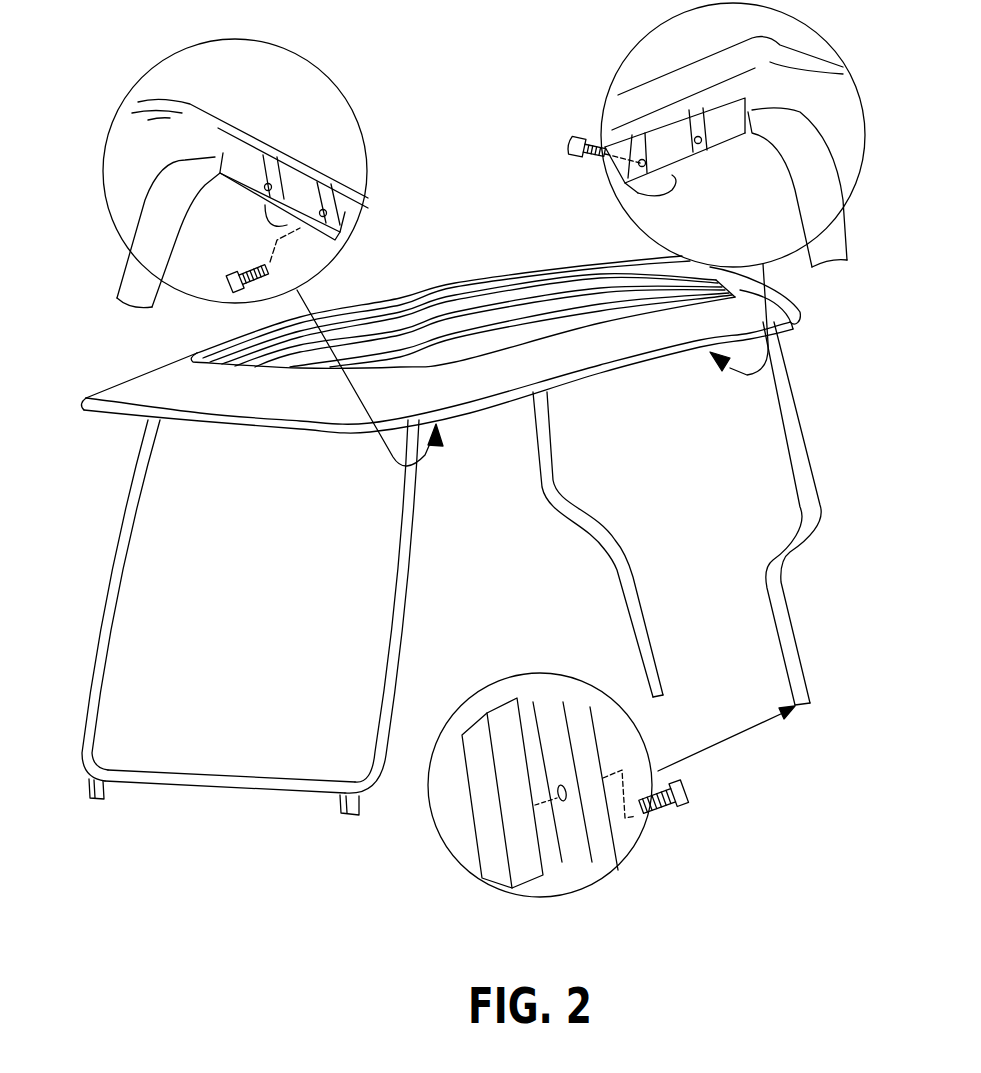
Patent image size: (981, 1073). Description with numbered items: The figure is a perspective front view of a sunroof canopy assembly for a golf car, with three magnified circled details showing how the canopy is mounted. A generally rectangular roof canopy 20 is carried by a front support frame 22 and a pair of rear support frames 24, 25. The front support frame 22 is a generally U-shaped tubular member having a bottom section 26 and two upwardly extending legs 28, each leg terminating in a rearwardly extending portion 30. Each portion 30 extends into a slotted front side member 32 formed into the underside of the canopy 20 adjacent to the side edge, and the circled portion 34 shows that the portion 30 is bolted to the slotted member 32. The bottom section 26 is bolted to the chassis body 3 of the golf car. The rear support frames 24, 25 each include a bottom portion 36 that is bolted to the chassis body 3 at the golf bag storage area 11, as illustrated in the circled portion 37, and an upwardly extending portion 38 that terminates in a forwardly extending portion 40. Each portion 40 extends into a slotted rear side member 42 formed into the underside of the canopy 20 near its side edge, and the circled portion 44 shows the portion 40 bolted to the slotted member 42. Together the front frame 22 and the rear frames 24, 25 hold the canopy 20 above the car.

The chassis body 3 is at (103, 799).
The golf bag storage area 11 is at (607, 860).
The roof canopy 20 is at (448, 287).
The front support frame 22 is at (108, 684).
The rear support frame 24 is at (586, 554).
The rear support frame 25 is at (812, 574).
The bottom section 26 is at (229, 794).
The upwardly extending legs 28 is at (130, 263).
The rearwardly extending portion 30 is at (293, 222).
The slotted front side member 32 is at (246, 165).
The circled portion 34 is at (367, 173).
The bottom portion 36 is at (468, 793).
The circled portion 37 is at (478, 893).
The upwardly extending portion 38 is at (798, 220).
The forwardly extending portion 40 is at (632, 205).
The slotted rear side member 42 is at (728, 123).
The circled portion 44 is at (600, 87).